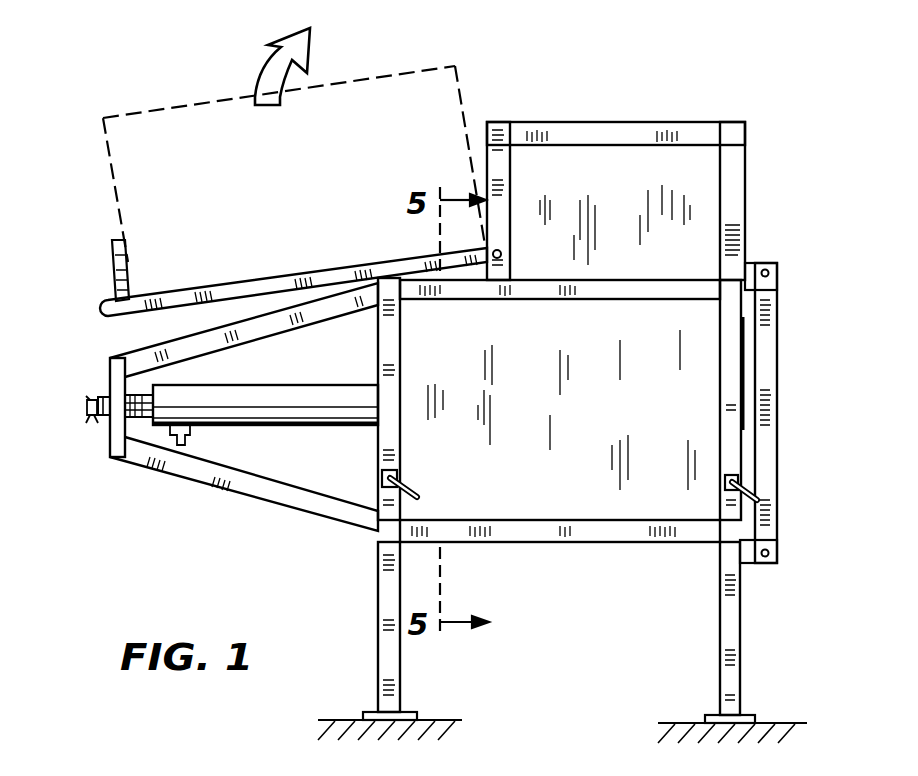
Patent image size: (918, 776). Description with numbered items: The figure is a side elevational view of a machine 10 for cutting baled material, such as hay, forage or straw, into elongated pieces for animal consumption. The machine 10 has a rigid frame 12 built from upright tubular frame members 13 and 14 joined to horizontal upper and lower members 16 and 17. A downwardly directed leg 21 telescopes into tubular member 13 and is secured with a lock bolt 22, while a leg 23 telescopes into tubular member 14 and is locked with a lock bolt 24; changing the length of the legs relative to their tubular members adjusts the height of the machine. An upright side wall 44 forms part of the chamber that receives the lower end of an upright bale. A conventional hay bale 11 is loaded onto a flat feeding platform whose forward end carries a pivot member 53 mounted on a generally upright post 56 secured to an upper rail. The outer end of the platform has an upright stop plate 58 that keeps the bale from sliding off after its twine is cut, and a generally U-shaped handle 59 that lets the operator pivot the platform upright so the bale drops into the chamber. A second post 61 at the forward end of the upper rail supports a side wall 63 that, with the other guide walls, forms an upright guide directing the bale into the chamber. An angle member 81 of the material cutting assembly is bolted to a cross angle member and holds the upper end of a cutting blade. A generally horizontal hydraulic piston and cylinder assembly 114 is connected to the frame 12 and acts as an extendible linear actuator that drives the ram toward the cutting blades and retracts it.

The machine 10 is at (764, 131).
The hay bale 11 is at (442, 102).
The frame 12 is at (274, 511).
The upright tubular frame member 13 is at (387, 350).
The upright tubular frame member 14 is at (730, 385).
The horizontal upper member 16 is at (612, 292).
The horizontal lower member 17 is at (610, 533).
The leg 21 is at (390, 648).
The lock bolt 22 is at (418, 487).
The leg 23 is at (732, 638).
The lock bolt 24 is at (758, 490).
The upright side wall 44 is at (537, 495).
The pivot member 53 is at (505, 252).
The post 56 is at (500, 170).
The stop plate 58 is at (112, 256).
The handle 59 is at (102, 308).
The post 61 is at (732, 183).
The side wall 63 is at (613, 160).
The angle member 81 is at (750, 262).
The piston and cylinder assembly 114 is at (303, 388).